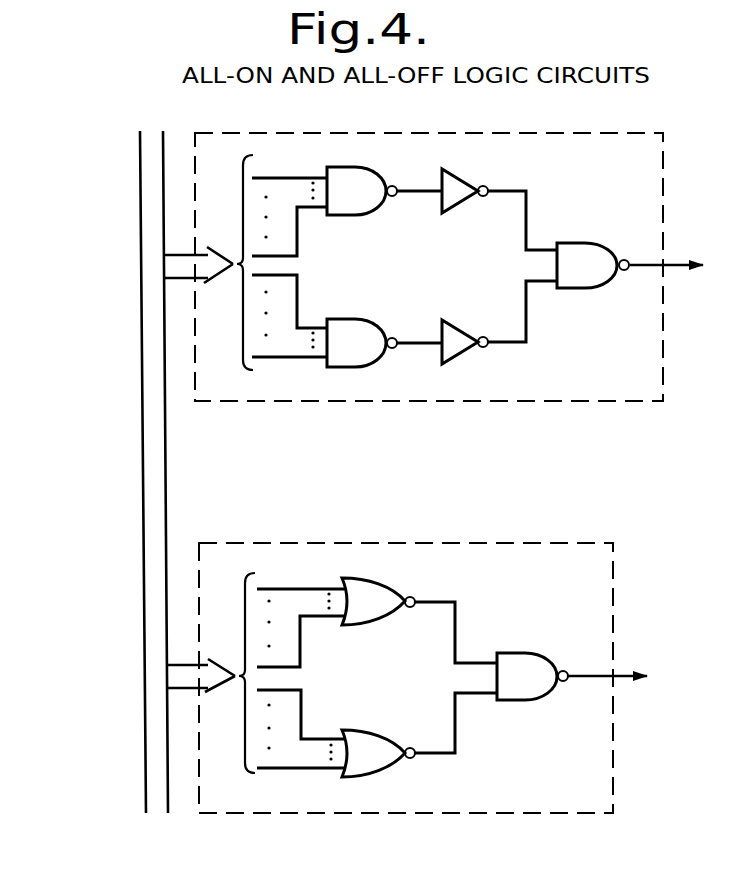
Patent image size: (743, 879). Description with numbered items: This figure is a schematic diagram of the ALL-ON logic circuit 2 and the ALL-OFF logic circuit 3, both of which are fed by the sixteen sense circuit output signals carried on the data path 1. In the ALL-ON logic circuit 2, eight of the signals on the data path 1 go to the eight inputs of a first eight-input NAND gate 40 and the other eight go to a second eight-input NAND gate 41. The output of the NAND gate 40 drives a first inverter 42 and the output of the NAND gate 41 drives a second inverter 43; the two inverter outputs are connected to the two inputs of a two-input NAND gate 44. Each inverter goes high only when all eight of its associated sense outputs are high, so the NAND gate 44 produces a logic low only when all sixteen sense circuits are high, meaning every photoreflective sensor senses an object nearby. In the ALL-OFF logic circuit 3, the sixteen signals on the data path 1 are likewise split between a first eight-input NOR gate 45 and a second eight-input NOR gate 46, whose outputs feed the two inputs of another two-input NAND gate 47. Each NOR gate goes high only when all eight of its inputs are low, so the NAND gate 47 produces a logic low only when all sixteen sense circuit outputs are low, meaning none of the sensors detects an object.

The data path 1 is at (147, 462).
The ALL-ON logic circuit 2 is at (627, 398).
The ALL-OFF logic circuit 3 is at (613, 615).
The first 8-input NAND gate 40 is at (357, 215).
The second 8-input NAND gate 41 is at (375, 327).
The first inverter 42 is at (462, 205).
The second inverter 43 is at (462, 330).
The 2-input NAND gate 44 is at (585, 288).
The first 8-input NOR gate 45 is at (373, 623).
The second 8-input NOR gate 46 is at (387, 746).
The 2-input NAND gate 47 is at (532, 658).